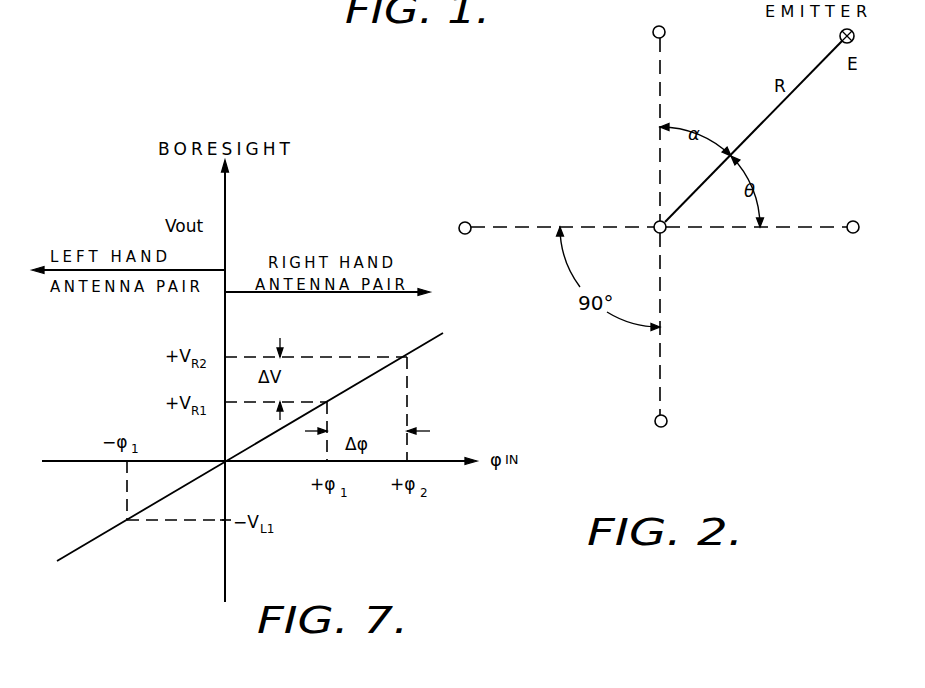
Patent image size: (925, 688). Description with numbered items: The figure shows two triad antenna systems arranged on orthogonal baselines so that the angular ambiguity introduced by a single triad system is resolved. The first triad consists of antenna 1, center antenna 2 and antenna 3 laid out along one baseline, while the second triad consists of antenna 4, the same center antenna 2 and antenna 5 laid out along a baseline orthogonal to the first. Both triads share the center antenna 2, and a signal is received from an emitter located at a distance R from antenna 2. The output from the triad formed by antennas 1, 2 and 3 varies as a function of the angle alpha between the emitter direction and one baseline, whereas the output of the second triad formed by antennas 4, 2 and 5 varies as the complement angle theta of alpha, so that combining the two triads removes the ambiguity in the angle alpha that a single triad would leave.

The antenna 1 is at (466, 215).
The center antenna 2 is at (650, 217).
The antenna 3 is at (853, 214).
The antenna 4 is at (668, 34).
The antenna 5 is at (670, 424).